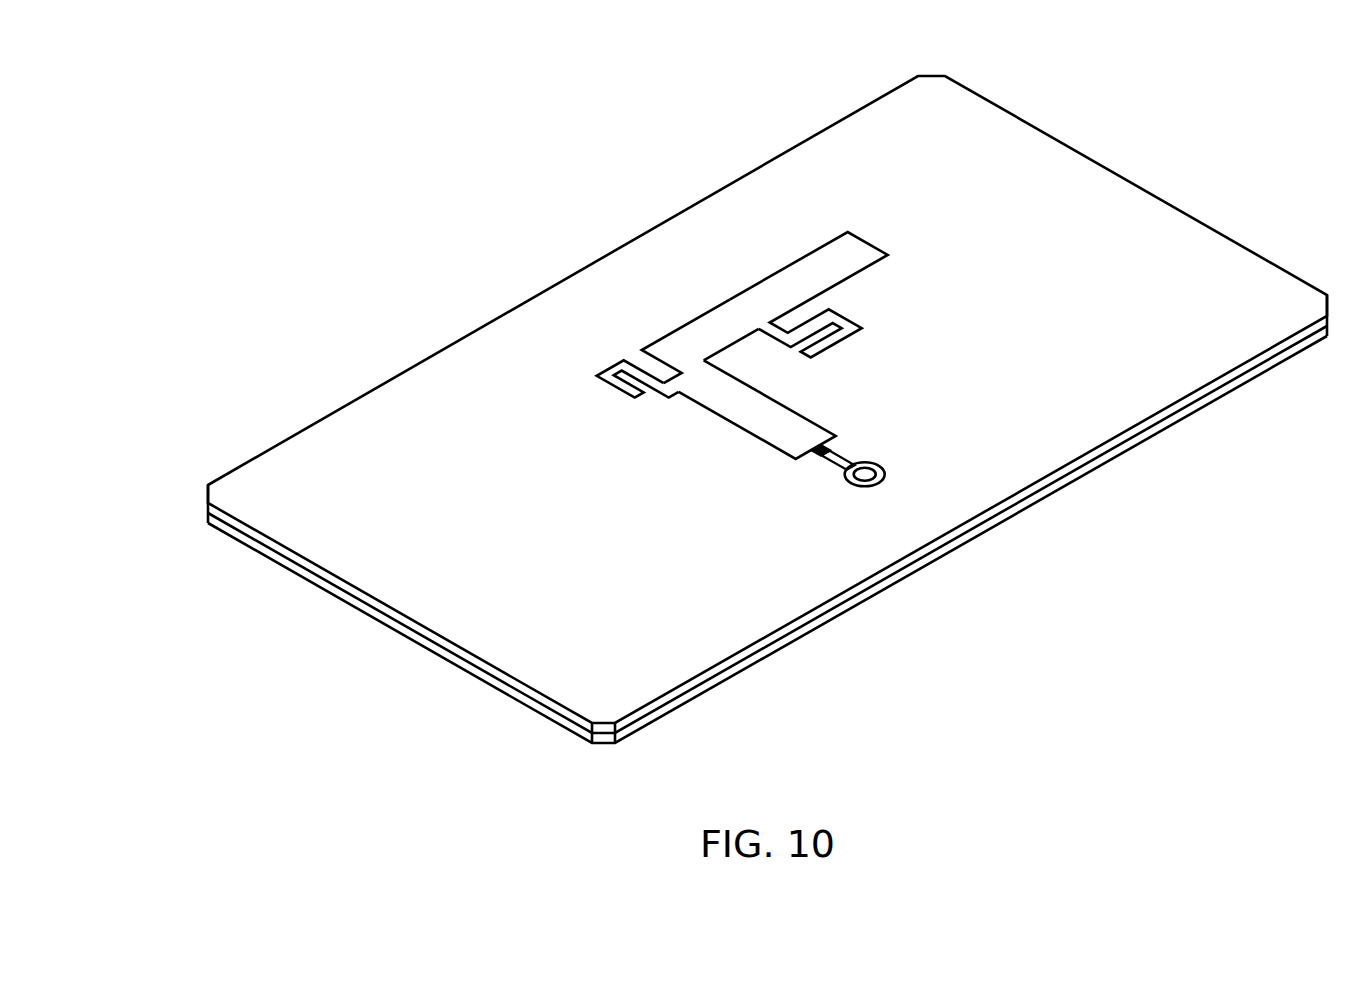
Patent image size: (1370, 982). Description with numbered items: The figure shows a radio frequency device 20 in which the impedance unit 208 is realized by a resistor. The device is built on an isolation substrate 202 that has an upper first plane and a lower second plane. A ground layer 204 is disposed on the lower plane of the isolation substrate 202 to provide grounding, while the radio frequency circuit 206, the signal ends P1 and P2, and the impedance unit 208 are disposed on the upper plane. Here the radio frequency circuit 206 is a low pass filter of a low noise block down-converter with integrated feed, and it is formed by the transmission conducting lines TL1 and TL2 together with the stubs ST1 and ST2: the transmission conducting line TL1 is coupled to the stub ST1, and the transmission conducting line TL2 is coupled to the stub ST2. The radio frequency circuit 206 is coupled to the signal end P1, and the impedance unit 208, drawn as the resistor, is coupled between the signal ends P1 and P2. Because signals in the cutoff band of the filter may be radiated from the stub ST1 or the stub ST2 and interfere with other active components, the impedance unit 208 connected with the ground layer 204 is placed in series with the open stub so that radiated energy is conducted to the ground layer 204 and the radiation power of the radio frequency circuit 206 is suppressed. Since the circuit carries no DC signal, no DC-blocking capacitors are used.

The radio frequency device 20 is at (777, 404).
The isolation substrate 202 is at (1170, 222).
The ground layer 204 is at (1266, 373).
The radio frequency circuit 206 is at (642, 281).
The impedance unit 208 is at (838, 453).
The stub ST1 is at (755, 436).
The transmission conducting line TL1 is at (618, 362).
The transmission conducting line TL2 is at (683, 326).
The stub ST2 is at (788, 283).
The signal end P1 is at (830, 442).
The signal end P2 is at (866, 478).